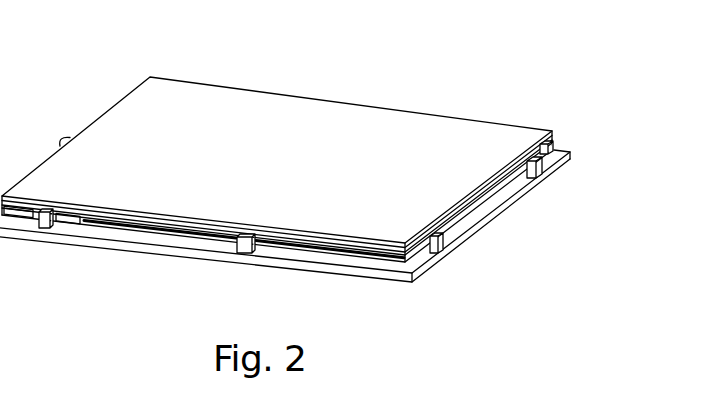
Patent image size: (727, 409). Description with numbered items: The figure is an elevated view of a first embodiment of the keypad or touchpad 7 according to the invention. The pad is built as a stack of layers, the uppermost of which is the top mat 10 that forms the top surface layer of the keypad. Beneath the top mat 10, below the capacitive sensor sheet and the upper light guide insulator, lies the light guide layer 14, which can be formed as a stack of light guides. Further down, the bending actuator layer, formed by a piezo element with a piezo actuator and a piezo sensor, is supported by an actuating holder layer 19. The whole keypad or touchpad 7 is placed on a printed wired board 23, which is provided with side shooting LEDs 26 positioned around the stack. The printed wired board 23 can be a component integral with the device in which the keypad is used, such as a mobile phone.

The keypad or touchpad 7 is at (440, 59).
The top mat 10 is at (308, 117).
The light guide layer 14 is at (315, 247).
The actuating holder layer 19 is at (133, 230).
The printed wired board 23 is at (105, 242).
The side shooting LEDs 26 is at (243, 251).